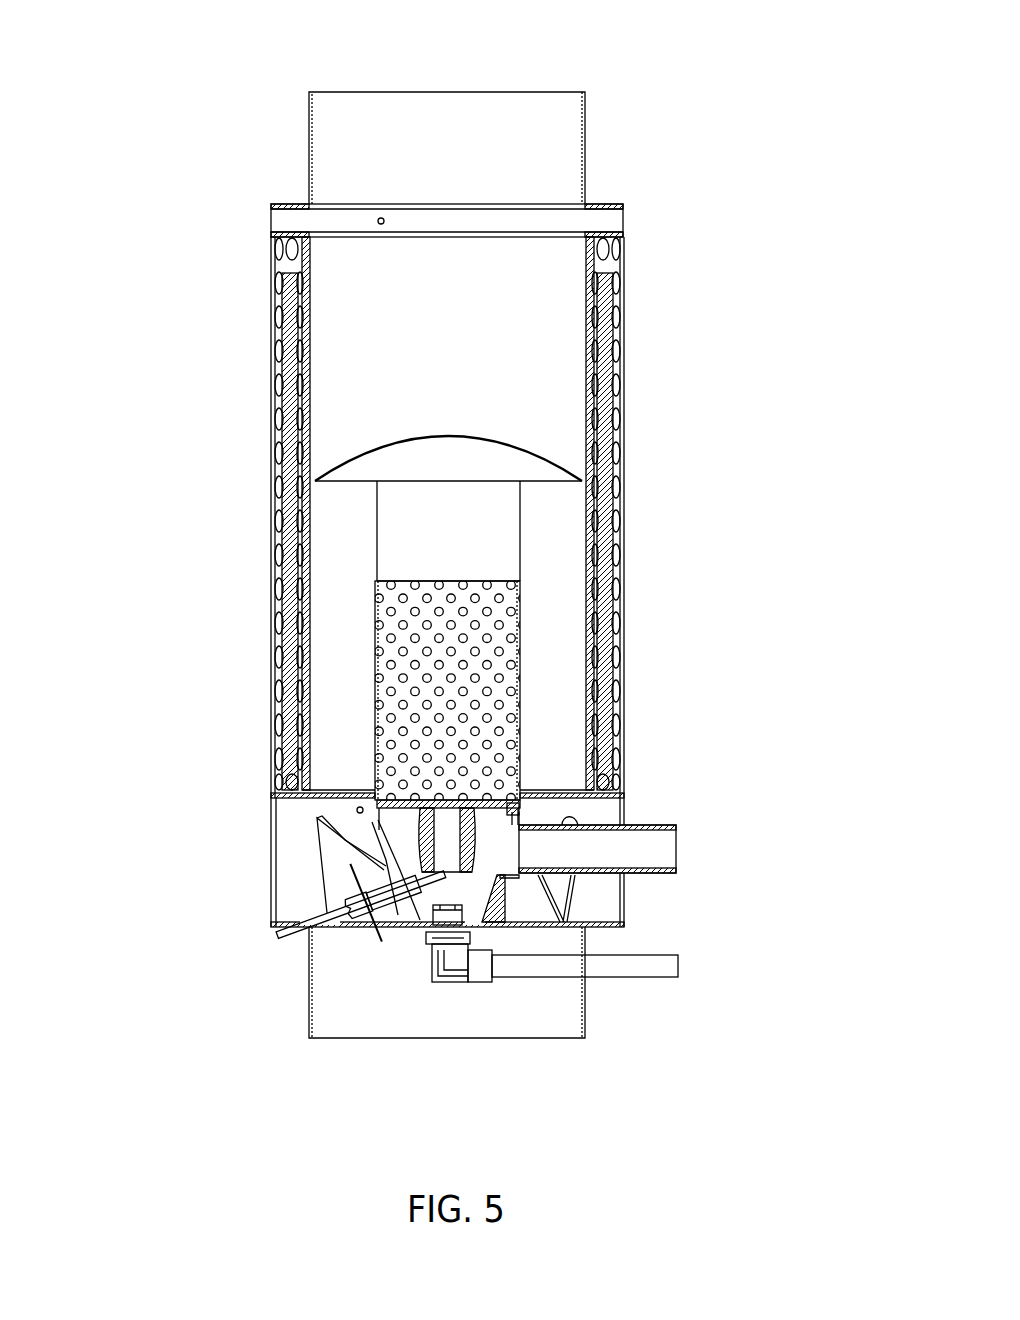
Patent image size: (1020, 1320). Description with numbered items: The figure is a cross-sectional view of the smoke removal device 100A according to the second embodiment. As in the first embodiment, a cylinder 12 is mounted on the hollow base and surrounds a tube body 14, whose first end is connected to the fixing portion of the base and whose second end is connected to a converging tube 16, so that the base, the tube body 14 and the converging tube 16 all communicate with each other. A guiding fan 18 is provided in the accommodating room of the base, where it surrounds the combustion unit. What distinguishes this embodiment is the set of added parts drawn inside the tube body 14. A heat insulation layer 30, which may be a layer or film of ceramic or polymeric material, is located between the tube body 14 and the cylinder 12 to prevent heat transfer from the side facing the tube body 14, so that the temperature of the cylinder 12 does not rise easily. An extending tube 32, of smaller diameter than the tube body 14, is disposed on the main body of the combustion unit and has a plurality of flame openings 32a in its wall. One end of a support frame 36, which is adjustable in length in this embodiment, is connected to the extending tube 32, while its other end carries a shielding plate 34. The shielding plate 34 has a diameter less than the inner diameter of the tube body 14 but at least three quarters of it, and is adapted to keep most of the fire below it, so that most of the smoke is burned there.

The smoke removal device 100A is at (232, 150).
The cylinder 12 is at (625, 329).
The tube body 14 is at (588, 345).
The converging tube 16 is at (625, 266).
The guiding fan 18 is at (336, 852).
The heat insulation layer 30 is at (606, 491).
The extending tube 32 is at (376, 690).
The flame openings 32a is at (433, 671).
The shielding plate 34 is at (352, 447).
The support frame 36 is at (377, 529).